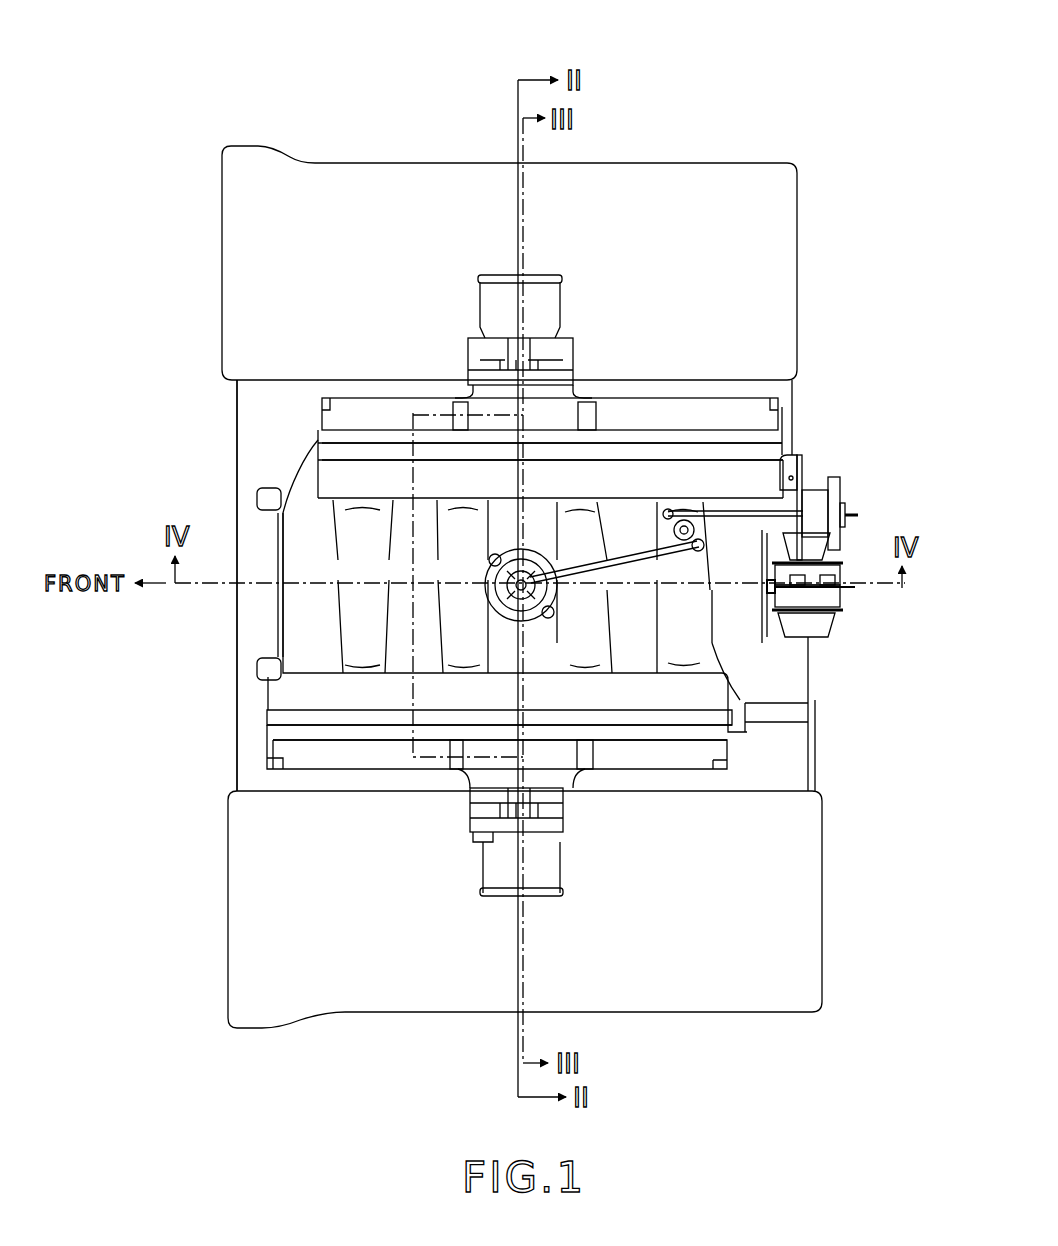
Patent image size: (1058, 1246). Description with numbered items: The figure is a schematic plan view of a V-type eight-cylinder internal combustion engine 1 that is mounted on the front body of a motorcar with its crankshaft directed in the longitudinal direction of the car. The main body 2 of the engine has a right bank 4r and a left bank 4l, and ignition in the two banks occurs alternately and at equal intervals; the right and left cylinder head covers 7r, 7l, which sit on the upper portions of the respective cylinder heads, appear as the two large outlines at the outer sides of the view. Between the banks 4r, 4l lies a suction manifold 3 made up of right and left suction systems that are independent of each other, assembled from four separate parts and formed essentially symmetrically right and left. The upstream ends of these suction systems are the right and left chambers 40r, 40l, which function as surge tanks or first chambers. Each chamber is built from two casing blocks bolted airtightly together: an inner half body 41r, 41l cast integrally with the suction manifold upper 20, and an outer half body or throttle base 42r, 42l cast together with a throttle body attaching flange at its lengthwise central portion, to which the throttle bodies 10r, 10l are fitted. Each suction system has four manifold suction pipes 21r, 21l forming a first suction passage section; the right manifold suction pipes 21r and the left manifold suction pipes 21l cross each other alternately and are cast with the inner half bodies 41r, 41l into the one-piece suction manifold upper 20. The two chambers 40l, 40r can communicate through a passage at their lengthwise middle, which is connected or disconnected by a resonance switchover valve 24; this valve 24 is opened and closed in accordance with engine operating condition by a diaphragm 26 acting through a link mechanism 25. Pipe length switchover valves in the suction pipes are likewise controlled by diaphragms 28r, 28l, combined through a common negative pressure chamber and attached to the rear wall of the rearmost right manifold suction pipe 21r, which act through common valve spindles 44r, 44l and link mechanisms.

The V-type eight-cylinder internal combustion engine 1 is at (755, 93).
The main body 2 is at (692, 162).
The suction manifold 3 is at (268, 623).
The right bank 4r is at (612, 162).
The left bank 4l is at (621, 1014).
The right cylinder head cover 7r is at (356, 182).
The left cylinder head cover 7l is at (355, 985).
The right throttle body 10r is at (540, 300).
The left throttle body 10l is at (543, 878).
The suction manifold upper 20 is at (276, 551).
The right manifold suction pipes 21r is at (357, 562).
The left manifold suction pipes 21l is at (310, 630).
The resonance switchover valve 24 is at (500, 554).
The link mechanism 25 is at (735, 510).
The diaphragm 26 is at (845, 495).
The right diaphragm 28r is at (848, 562).
The left diaphragm 28l is at (836, 636).
The right chamber 40r is at (414, 396).
The left chamber 40l is at (262, 730).
The right inner half body 41r is at (630, 470).
The left inner half body 41l is at (620, 702).
The right outer half body (throttle base) 42r is at (688, 410).
The left outer half body (throttle base) 42l is at (672, 757).
The right common valve spindle 44r is at (790, 454).
The left common valve spindle 44l is at (774, 712).